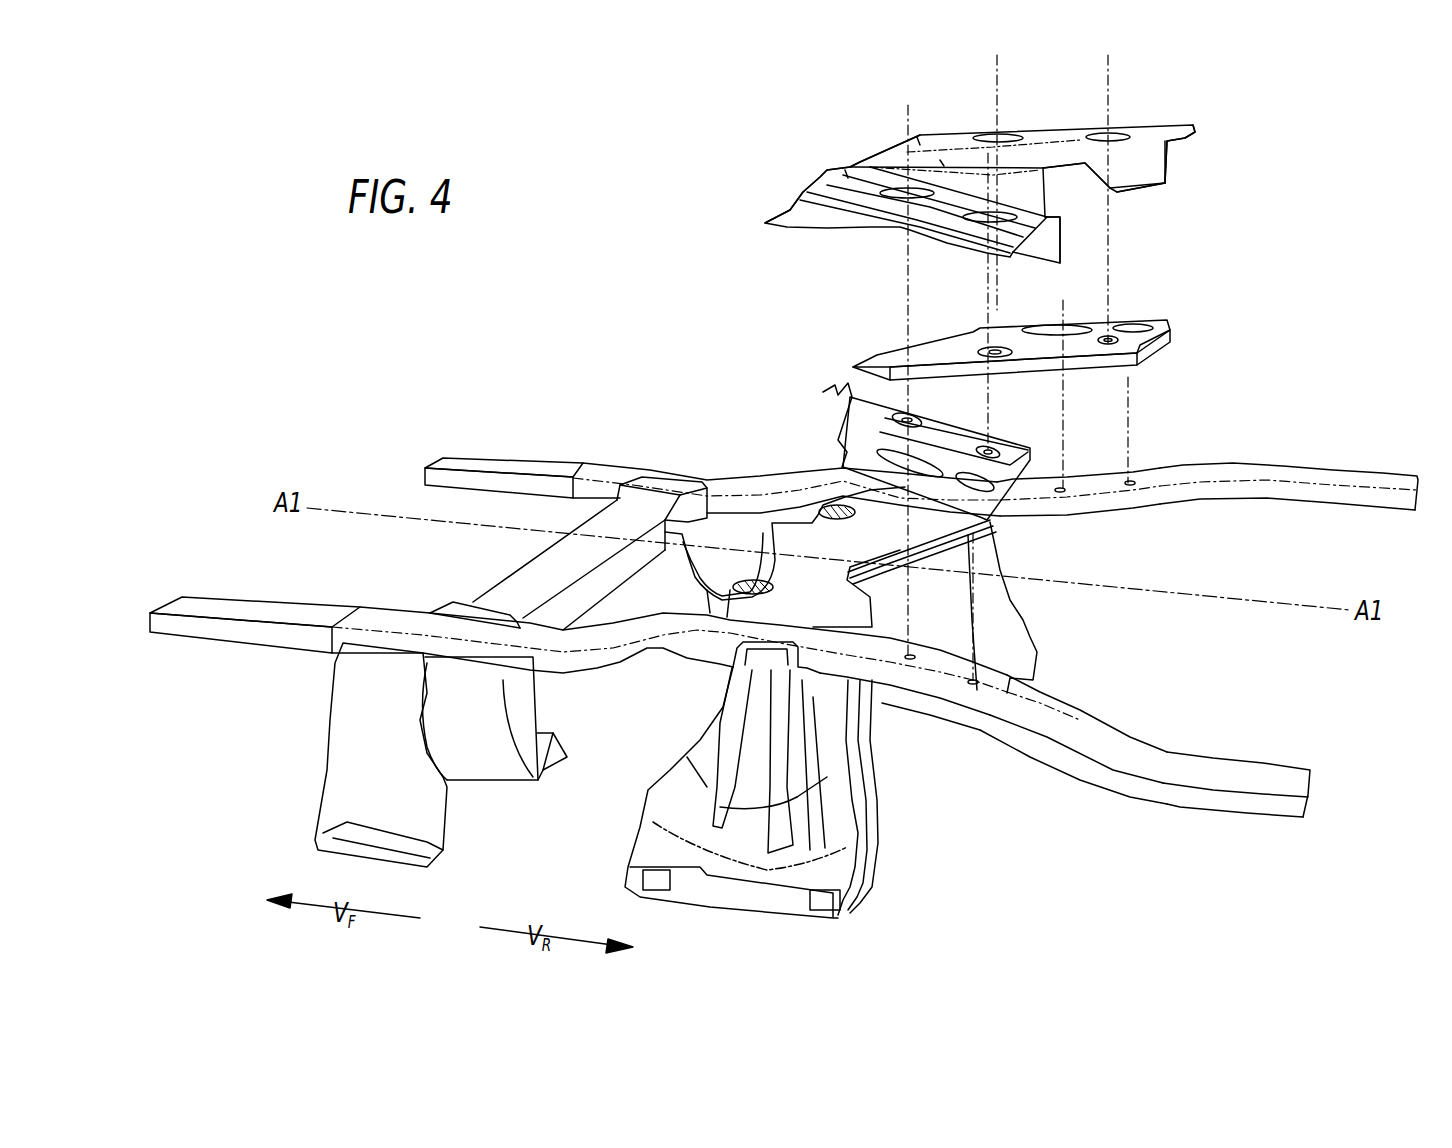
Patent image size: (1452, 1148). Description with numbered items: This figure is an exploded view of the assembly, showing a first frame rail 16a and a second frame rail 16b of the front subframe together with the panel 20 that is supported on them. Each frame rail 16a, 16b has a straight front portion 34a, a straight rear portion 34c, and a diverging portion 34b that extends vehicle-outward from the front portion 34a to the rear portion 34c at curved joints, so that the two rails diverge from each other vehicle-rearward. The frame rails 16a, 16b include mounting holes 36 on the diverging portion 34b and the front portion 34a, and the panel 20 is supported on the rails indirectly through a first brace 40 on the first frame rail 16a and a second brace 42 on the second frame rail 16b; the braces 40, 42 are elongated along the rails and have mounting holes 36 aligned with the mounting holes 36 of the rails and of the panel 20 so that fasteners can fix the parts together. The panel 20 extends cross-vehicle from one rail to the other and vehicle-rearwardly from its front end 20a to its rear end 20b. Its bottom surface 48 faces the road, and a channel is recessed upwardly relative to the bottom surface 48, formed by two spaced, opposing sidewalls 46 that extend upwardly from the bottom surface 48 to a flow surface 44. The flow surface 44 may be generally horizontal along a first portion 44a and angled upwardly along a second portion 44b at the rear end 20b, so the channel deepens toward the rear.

The first frame rail 16a is at (468, 455).
The second frame rail 16b is at (203, 597).
The panel 20 is at (1068, 130).
The front end 20a is at (885, 148).
The rear end 20b is at (1195, 142).
The front portion 34a is at (682, 471).
The diverging portion 34b is at (1085, 473).
The rear portion 34c is at (1360, 466).
The mounting holes 36 is at (983, 130).
The first brace 40 is at (1112, 373).
The second brace 42 is at (1013, 460).
The flow surface 44 is at (1123, 178).
The first portion 44a is at (918, 136).
The second portion 44b is at (1150, 186).
The sidewalls 46 is at (1148, 160).
The bottom surface 48 is at (940, 162).